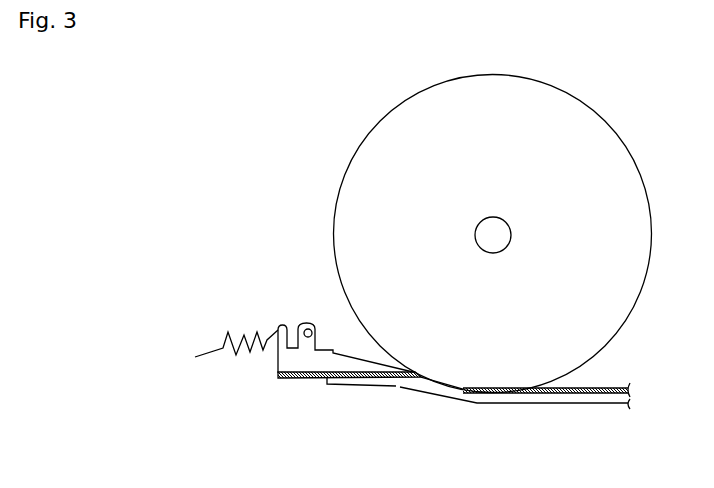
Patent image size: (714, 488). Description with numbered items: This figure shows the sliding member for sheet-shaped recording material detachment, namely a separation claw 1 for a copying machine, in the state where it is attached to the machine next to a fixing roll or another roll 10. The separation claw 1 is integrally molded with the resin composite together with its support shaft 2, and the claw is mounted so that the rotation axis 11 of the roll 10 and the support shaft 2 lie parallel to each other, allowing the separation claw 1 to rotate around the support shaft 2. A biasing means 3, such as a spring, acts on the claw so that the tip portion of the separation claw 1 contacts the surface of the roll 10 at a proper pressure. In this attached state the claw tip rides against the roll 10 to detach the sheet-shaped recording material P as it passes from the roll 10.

The roll 10 is at (354, 146).
The rotation axis 11 is at (492, 253).
The separation claw 1 is at (276, 375).
The support shaft 2 is at (300, 326).
The biasing means 3 is at (229, 332).
The recording sheet / paper P is at (580, 404).